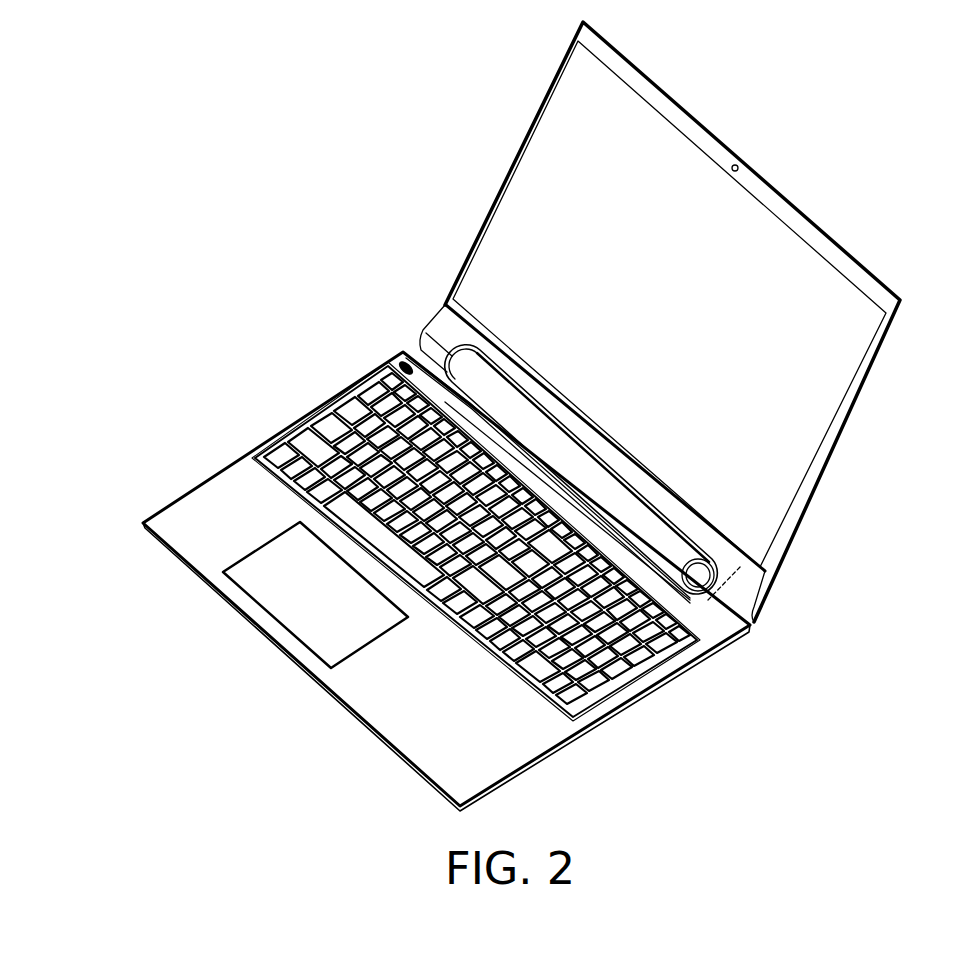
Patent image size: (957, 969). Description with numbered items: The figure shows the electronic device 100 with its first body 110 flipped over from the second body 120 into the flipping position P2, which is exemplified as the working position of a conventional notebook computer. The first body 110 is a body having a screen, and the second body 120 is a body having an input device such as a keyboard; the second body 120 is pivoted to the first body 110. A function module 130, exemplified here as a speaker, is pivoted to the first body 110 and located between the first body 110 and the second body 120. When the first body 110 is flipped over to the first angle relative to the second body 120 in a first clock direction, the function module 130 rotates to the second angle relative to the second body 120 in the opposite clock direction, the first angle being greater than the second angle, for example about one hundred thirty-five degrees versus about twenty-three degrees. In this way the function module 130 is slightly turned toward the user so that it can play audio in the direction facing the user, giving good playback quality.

The electronic device 100 is at (188, 243).
The first body 110 is at (851, 424).
The second body 120 is at (673, 677).
The function module 130 is at (665, 537).
The flipping position P2 is at (766, 822).